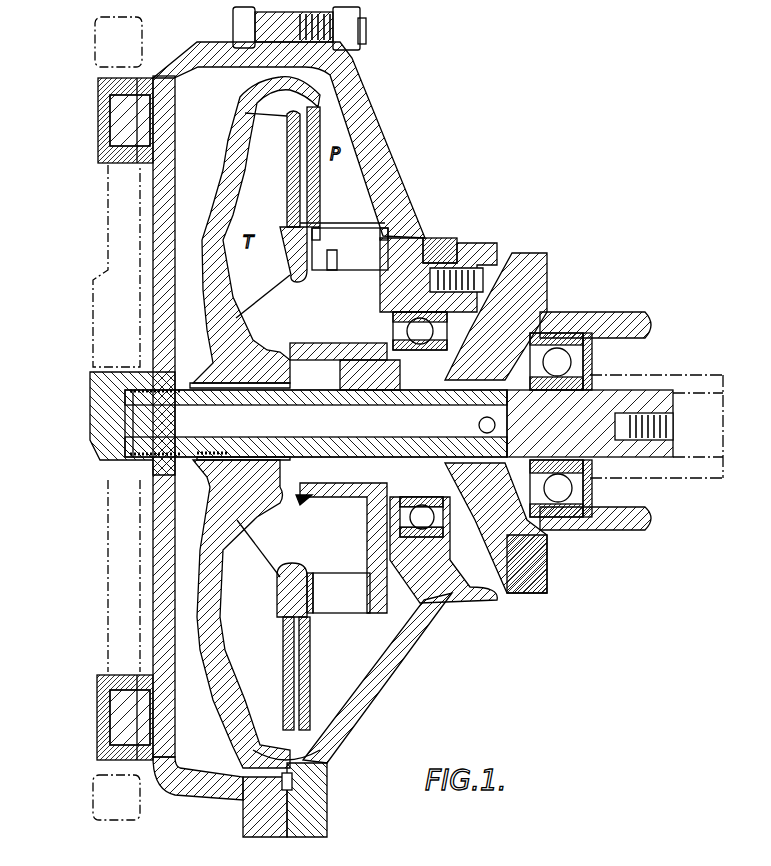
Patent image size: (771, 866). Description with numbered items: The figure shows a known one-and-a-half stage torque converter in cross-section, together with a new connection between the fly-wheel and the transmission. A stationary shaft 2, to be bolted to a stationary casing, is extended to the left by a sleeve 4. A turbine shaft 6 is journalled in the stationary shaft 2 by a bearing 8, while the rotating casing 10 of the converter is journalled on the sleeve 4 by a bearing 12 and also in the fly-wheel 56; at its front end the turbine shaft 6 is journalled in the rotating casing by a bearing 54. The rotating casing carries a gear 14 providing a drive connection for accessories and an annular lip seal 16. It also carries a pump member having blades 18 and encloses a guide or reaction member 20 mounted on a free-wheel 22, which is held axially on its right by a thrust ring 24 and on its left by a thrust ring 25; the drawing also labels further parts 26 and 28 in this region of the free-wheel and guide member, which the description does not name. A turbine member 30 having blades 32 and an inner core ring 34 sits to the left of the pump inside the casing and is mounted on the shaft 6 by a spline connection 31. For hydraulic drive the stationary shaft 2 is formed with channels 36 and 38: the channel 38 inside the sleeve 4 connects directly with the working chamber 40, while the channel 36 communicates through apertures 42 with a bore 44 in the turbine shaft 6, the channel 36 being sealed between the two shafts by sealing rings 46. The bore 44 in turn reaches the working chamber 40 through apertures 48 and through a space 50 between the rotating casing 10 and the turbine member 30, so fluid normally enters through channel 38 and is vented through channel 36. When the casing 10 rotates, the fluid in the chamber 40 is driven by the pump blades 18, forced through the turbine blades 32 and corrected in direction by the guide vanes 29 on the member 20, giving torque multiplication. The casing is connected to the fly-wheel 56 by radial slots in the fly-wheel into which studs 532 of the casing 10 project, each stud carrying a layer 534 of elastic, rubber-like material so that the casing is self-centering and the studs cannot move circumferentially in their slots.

The stationary shaft 2 is at (535, 262).
The sleeve 4 is at (301, 398).
The turbine shaft 6 is at (673, 425).
The bearing 8 is at (572, 362).
The rotating casing 10 is at (393, 178).
The bearing 12 is at (452, 605).
The gear 14 is at (488, 245).
The annular lip seal 16 is at (440, 244).
The blades 18 is at (350, 204).
The guide or reaction member 20 is at (367, 540).
The free-wheel 22 is at (335, 344).
The thrust ring 24 is at (383, 390).
The thrust ring 25 is at (300, 507).
The pressure plate portion 26 is at (290, 278).
The piston 28 is at (330, 270).
The guide vanes 29 is at (352, 604).
The turbine member 30 is at (228, 140).
The spline connection 31 is at (232, 396).
The blades 32 is at (275, 199).
The inner core ring 34 is at (290, 158).
The channel 36 is at (555, 312).
The channel 38 is at (545, 550).
The working chamber 40 is at (322, 310).
The apertures 42 is at (472, 398).
The bore 44 is at (356, 429).
The sealing rings 46 is at (583, 480).
The apertures 48 is at (180, 410).
The space 50 is at (213, 176).
The bearing 54 is at (95, 408).
The fly-wheel 56 is at (108, 240).
The studs 532 is at (120, 720).
The layer of elastic rubber-like material 534 is at (150, 775).